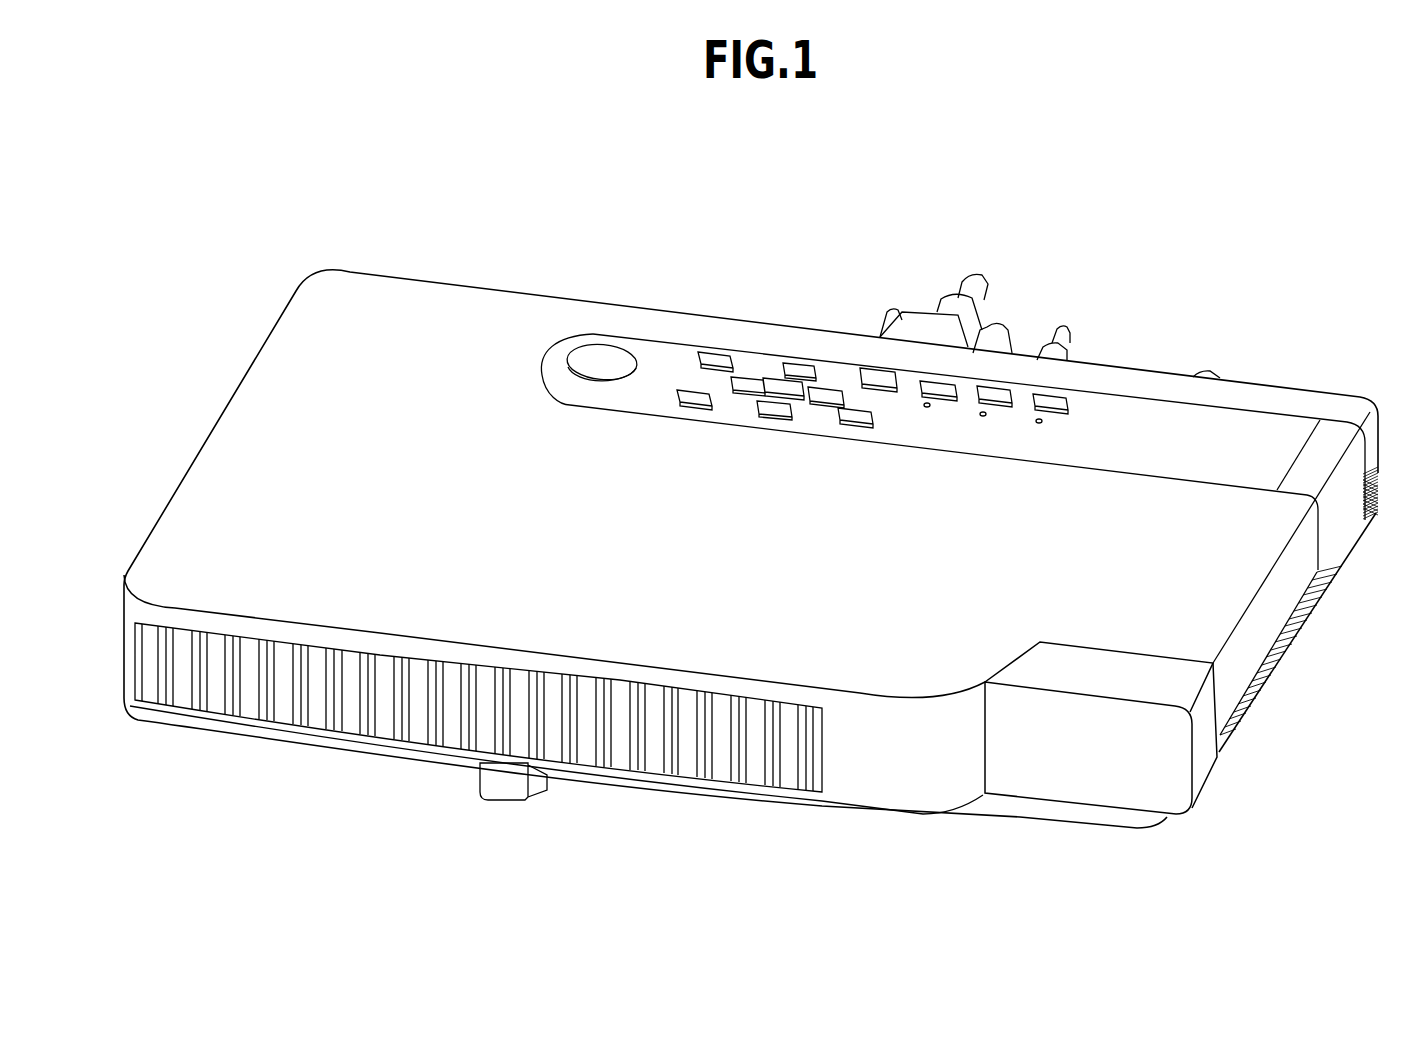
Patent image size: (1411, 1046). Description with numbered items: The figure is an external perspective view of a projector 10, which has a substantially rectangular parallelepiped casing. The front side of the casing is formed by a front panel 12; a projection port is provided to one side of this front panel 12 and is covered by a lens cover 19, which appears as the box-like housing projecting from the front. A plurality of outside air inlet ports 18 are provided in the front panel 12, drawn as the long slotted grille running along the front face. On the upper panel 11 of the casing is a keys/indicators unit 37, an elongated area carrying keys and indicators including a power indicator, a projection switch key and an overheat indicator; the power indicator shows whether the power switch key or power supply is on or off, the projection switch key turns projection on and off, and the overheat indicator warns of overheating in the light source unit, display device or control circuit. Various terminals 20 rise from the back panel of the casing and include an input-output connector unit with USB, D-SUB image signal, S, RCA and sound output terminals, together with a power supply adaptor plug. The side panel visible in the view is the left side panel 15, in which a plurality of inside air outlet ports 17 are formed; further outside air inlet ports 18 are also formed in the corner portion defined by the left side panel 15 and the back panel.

The projector 10 is at (882, 178).
The upper panel 11 is at (490, 306).
The front panel 12 is at (862, 755).
The left side panel 15 is at (1258, 635).
The inside air outlet ports 17 is at (1272, 683).
The outside air inlet ports 18 is at (745, 782).
The lens cover 19 is at (1095, 765).
The terminals 20 is at (1010, 294).
The keys/indicators unit 37 is at (757, 342).